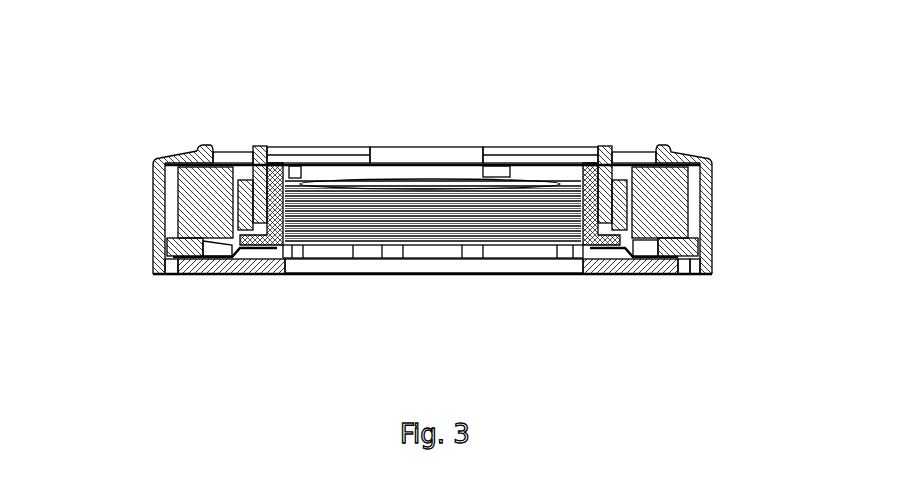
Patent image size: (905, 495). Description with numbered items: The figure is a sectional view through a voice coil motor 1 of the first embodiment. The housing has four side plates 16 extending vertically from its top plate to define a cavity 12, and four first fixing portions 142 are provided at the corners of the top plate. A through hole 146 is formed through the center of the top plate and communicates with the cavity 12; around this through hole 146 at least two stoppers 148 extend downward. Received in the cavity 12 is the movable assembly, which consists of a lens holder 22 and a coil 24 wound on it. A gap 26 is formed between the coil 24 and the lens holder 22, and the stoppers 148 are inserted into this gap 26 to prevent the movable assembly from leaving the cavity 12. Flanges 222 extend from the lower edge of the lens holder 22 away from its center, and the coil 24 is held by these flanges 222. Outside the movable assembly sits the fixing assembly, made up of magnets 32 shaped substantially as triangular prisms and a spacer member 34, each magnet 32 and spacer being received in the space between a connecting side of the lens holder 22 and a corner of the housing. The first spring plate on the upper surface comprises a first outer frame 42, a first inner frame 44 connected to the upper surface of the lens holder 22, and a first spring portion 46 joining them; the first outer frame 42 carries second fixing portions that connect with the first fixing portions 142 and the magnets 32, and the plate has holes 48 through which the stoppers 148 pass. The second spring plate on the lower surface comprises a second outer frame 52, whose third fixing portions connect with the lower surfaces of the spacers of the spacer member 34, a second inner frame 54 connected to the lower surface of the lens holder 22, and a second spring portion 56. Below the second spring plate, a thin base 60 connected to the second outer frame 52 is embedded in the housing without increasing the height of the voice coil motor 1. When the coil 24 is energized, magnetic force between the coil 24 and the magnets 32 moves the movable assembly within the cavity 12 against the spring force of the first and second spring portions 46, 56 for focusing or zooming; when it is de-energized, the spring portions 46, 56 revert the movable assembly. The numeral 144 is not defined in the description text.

The voice coil motor 1 is at (313, 34).
The cavity 12 is at (692, 202).
The side plate 16 is at (155, 183).
The lens holder 22 is at (300, 260).
The coil 24 is at (187, 208).
The gap 26 is at (163, 263).
The magnet 32 is at (183, 195).
The spacer member 34 is at (168, 245).
The first outer frame 42 is at (188, 160).
The first inner frame 44 is at (296, 160).
The first spring portion 46 is at (246, 165).
The hole 48 is at (260, 150).
The second outer frame 52 is at (188, 273).
The second inner frame 54 is at (268, 275).
The second spring portion 56 is at (223, 275).
The base 60 is at (610, 275).
The first fixing portion 142 is at (168, 160).
The second cover portion 144 is at (210, 148).
The through hole 146 is at (370, 148).
The stopper 148 is at (283, 163).
The flange 222 is at (247, 275).